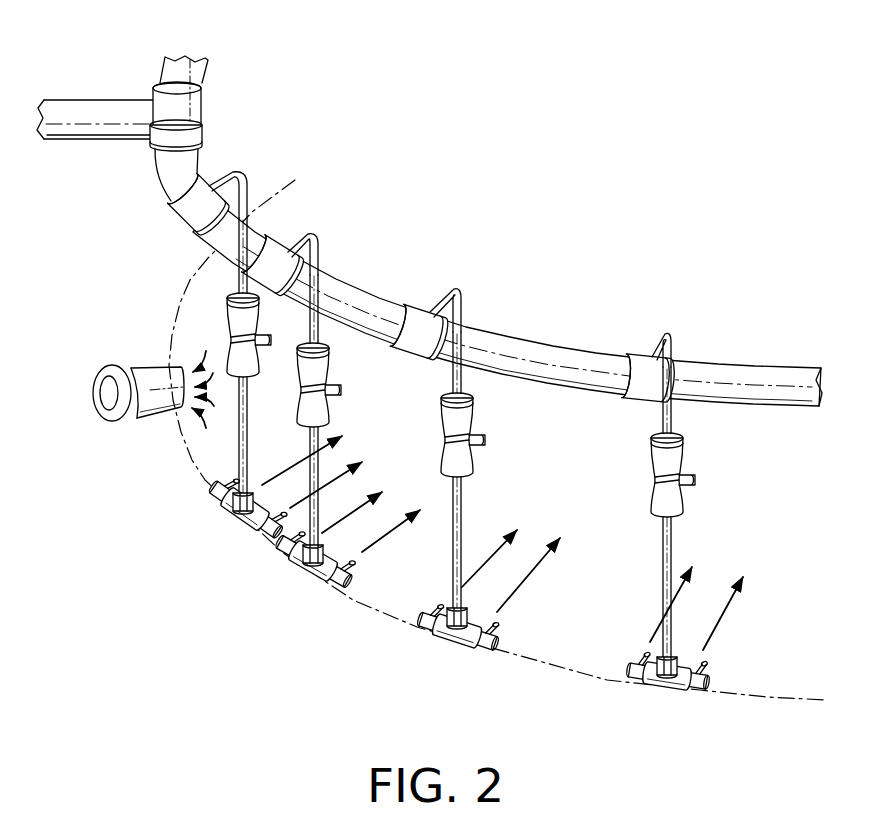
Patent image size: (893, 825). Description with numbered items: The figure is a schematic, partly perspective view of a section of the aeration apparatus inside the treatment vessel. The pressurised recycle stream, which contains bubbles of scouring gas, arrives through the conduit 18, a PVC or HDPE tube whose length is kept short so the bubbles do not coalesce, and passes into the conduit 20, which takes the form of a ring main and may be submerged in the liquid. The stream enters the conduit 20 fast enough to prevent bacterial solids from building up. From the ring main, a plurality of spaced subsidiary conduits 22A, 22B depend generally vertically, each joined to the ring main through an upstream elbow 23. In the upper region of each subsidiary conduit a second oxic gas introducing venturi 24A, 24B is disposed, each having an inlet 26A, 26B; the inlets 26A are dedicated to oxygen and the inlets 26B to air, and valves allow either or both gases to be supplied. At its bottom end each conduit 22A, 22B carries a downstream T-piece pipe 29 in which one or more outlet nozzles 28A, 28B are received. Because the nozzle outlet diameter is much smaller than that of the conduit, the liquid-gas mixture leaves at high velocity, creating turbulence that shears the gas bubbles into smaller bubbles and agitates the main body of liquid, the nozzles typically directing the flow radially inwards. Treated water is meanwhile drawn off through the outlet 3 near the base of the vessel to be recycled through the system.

The outlet 3 is at (178, 362).
The conduit 18 is at (93, 99).
The conduit 20 is at (541, 355).
The subsidiary conduit 22A is at (462, 507).
The subsidiary conduit 22B is at (319, 449).
The upstream elbow 23 is at (300, 242).
The venturi 24A is at (514, 438).
The venturi 24B is at (365, 387).
The inlet 26A is at (528, 428).
The inlet 26B is at (379, 384).
The outlet nozzle 28A is at (274, 541).
The outlet nozzle 28B is at (628, 672).
The T-piece pipe 29 is at (436, 617).